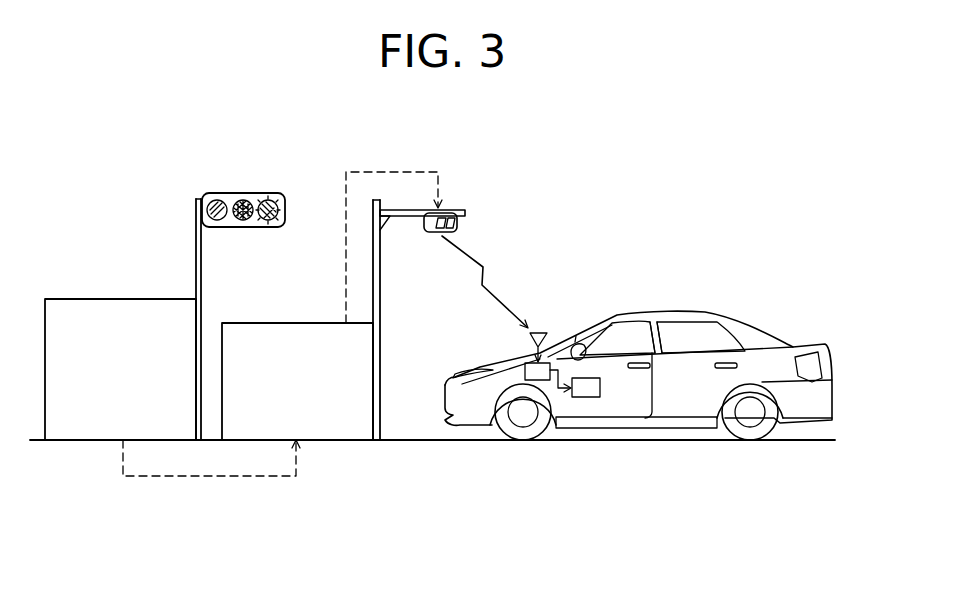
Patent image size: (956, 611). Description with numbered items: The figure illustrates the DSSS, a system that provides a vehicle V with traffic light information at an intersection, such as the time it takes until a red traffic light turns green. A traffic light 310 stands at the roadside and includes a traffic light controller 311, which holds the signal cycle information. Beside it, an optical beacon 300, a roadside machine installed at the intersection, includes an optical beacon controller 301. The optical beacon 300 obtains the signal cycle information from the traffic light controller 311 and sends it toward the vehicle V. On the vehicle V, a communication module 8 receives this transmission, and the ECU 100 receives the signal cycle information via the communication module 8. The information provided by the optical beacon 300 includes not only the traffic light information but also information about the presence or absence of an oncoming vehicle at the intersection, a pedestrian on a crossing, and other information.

The communication module 8 is at (526, 372).
The ECU 100 is at (587, 397).
The optical beacon 300 is at (456, 209).
The optical beacon controller 301 is at (327, 322).
The traffic light 310 is at (243, 190).
The traffic light controller 311 is at (168, 299).
The vehicle V is at (705, 312).